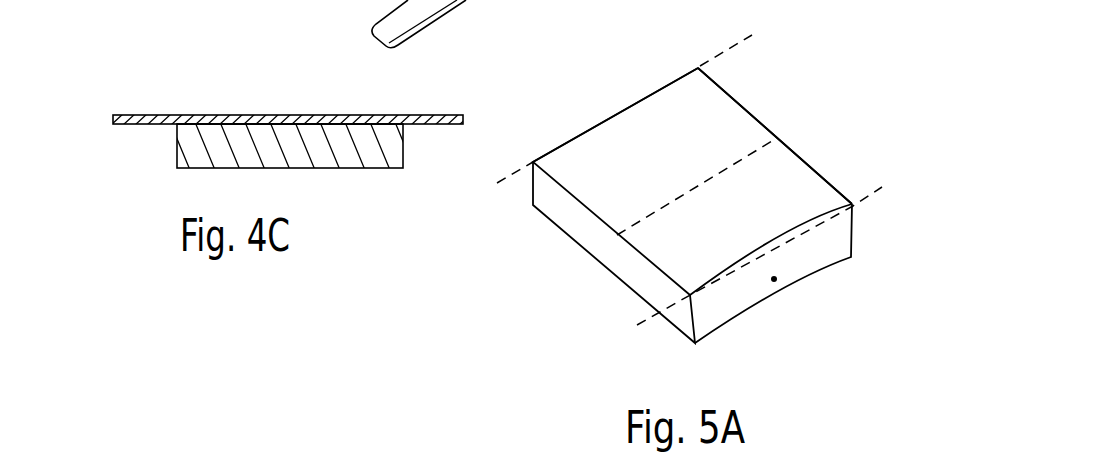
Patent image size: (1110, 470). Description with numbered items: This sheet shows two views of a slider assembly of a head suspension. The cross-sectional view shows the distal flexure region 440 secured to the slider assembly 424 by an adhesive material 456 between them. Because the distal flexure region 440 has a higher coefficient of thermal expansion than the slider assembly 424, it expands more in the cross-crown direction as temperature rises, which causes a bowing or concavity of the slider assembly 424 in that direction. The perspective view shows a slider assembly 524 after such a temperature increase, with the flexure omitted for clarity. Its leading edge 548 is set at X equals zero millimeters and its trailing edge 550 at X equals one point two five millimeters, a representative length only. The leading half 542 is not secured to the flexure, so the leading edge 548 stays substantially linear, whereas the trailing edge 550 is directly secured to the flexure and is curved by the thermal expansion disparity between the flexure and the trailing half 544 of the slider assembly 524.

In FIG. 4C, the distal flexure region 440 is at (130, 118).
In FIG. 4C, the adhesive material 456 is at (203, 125).
In FIG. 4C, the slider assembly 424 is at (207, 158).
In FIG. 5A, the slider assembly 524 is at (682, 195).
In FIG. 5A, the leading edge 548 is at (611, 108).
In FIG. 5A, the leading half 542 is at (713, 113).
In FIG. 5A, the trailing half 544 is at (807, 188).
In FIG. 5A, the trailing edge 550 is at (813, 250).